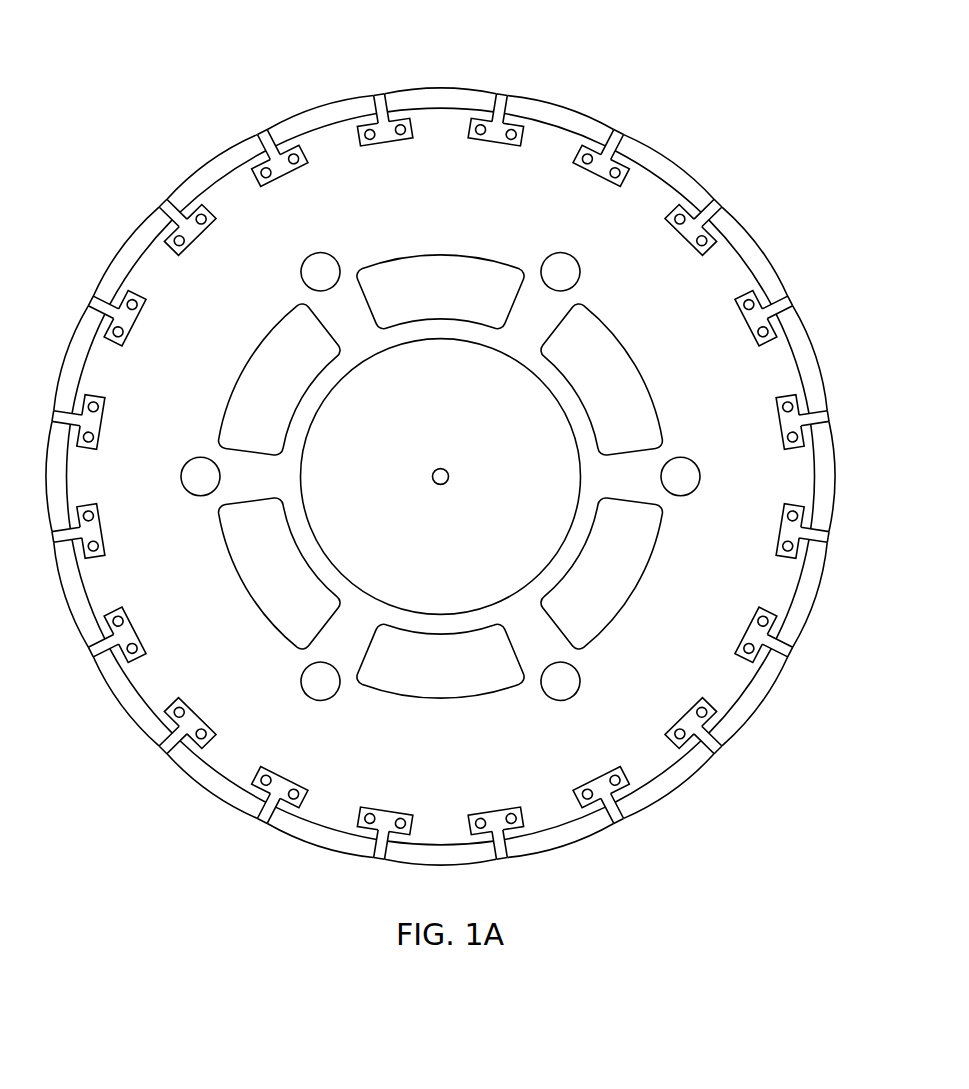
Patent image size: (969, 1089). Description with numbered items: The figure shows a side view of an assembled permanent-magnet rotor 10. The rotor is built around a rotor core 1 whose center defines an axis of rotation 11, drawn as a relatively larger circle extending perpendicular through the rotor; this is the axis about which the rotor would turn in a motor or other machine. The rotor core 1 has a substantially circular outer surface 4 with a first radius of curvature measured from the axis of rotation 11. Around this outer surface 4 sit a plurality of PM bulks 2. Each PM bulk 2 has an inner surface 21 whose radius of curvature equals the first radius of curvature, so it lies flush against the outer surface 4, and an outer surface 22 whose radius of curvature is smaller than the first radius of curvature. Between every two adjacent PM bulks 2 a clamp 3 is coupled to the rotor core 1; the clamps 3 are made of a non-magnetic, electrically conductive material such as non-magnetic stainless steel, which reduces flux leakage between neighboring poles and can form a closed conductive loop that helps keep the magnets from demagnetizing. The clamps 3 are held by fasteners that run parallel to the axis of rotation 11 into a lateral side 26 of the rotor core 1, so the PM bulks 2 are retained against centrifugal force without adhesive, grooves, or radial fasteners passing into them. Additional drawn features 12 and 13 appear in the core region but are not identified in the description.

The rotor core 1 is at (698, 300).
The PM bulk 2 is at (663, 167).
The clamp 3 is at (498, 84).
The outer surface 4 is at (318, 123).
The permanent-magnet rotor 10 is at (205, 835).
The axis of rotation 11 is at (450, 483).
The flux barrier window 12 is at (268, 575).
The rivet hole 13 is at (567, 688).
The inner surface 21 is at (218, 185).
The outer surface 22 is at (210, 176).
The lateral side 26 is at (190, 290).